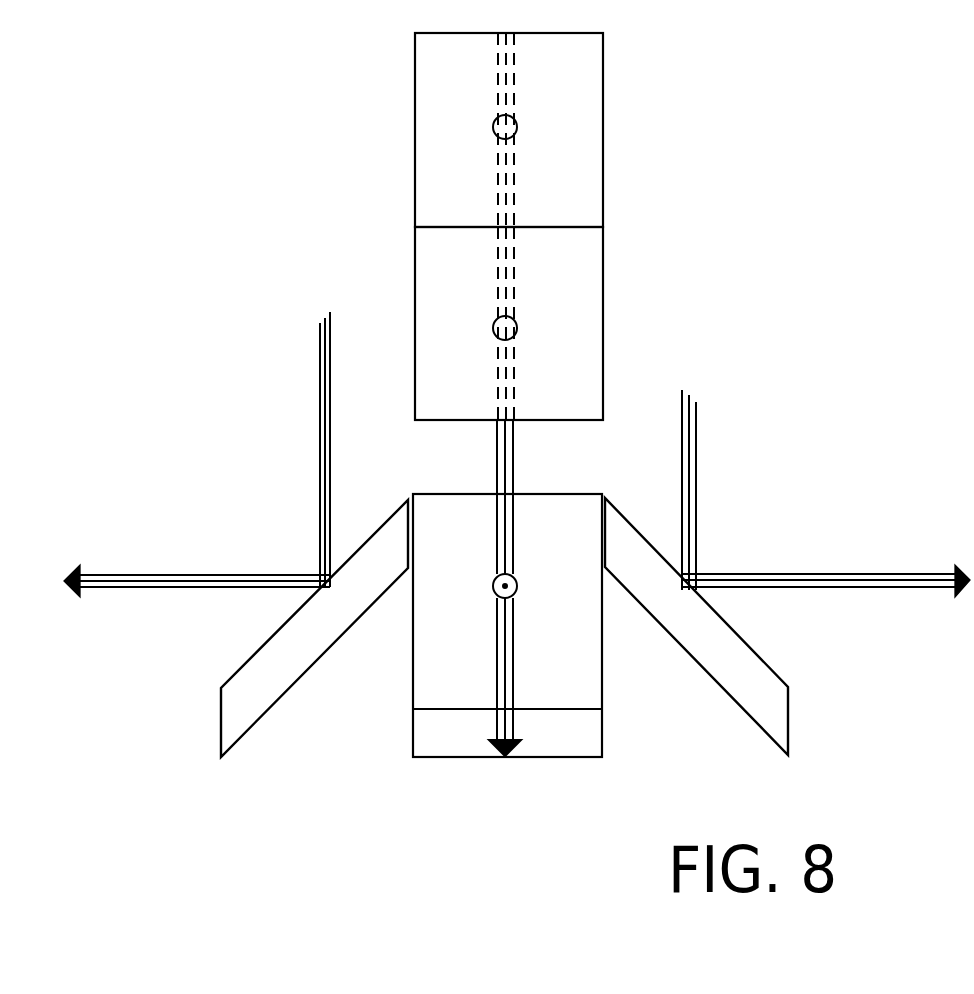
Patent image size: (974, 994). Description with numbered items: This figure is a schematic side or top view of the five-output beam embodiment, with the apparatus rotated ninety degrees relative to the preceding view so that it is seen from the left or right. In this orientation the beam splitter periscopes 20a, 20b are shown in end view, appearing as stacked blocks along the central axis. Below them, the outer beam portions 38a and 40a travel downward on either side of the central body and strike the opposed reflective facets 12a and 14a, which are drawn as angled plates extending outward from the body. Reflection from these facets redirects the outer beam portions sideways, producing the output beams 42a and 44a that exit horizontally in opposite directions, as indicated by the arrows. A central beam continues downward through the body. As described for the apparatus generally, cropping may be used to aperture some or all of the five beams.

The beam splitter periscope 20b is at (567, 121).
The beam splitter periscope 20a is at (567, 268).
The reflective facet 14a is at (276, 634).
The reflective facet 12a is at (770, 665).
The outer beam portion 40a is at (318, 390).
The outer beam portion 38a is at (688, 443).
The output beam 44a is at (164, 575).
The output beam 42a is at (846, 573).